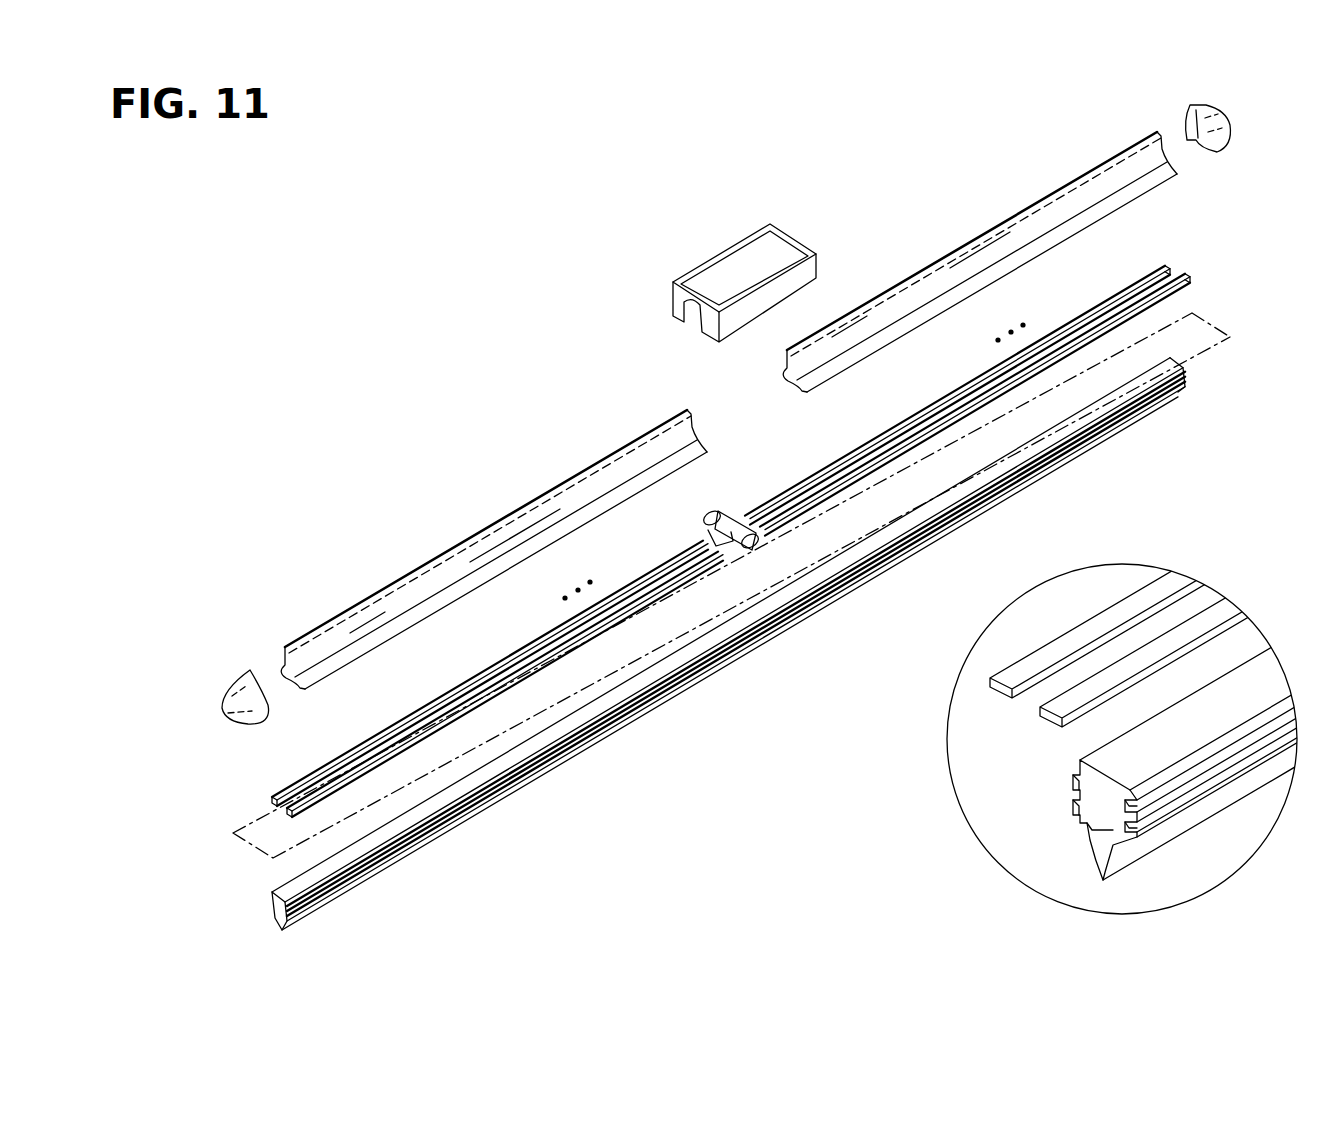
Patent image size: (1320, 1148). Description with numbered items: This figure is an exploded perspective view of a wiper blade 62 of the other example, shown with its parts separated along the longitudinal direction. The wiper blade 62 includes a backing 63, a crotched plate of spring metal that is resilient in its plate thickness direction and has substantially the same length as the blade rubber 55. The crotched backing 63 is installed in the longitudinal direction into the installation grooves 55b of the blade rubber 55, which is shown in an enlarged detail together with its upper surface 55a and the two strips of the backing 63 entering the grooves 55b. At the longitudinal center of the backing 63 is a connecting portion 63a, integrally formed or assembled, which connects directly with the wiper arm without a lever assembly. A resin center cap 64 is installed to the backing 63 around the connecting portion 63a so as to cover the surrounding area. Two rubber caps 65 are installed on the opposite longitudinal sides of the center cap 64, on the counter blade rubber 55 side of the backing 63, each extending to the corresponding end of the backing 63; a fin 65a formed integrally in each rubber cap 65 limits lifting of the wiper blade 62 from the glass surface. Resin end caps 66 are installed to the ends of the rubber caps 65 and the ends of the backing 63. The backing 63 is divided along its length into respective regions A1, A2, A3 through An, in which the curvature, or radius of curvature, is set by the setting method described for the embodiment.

The wiper blade 62 is at (545, 295).
The center cap 64 is at (706, 258).
The rubber cap 65 is at (497, 520).
The fin 65a is at (420, 574).
The end cap 66 is at (236, 676).
The backing 63 is at (268, 800).
The connecting portion 63a is at (725, 516).
The blade rubber 55 is at (270, 912).
The top surface of guide rail 55a is at (1088, 752).
The installation groove 55b is at (1078, 782).
The region A1 is at (247, 783).
The region A2 is at (347, 724).
The region A3 is at (546, 612).
The region An is at (1037, 313).